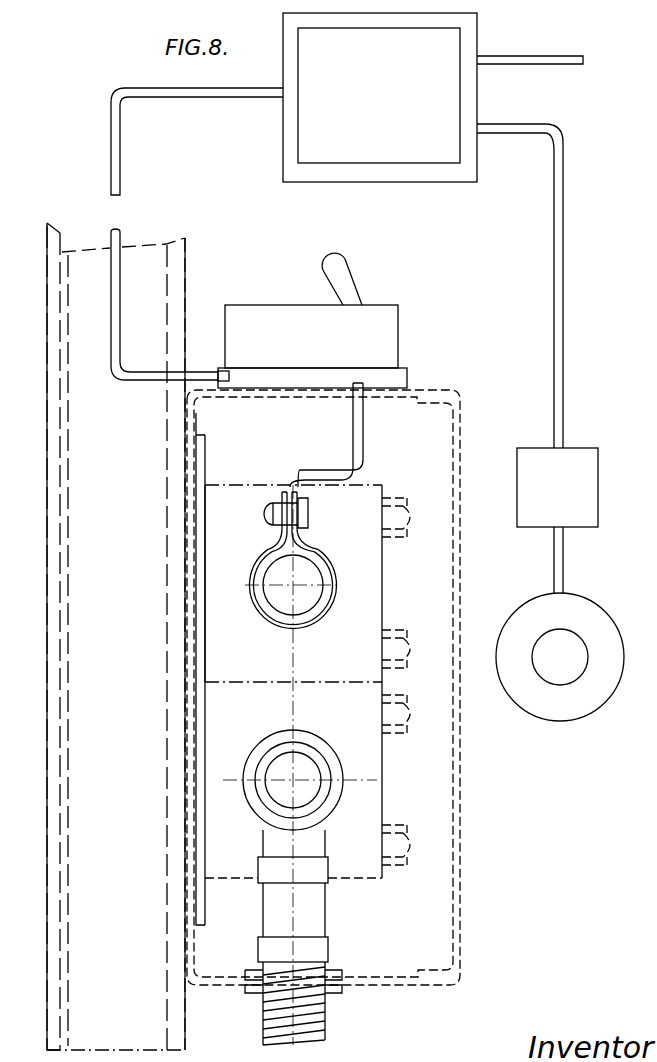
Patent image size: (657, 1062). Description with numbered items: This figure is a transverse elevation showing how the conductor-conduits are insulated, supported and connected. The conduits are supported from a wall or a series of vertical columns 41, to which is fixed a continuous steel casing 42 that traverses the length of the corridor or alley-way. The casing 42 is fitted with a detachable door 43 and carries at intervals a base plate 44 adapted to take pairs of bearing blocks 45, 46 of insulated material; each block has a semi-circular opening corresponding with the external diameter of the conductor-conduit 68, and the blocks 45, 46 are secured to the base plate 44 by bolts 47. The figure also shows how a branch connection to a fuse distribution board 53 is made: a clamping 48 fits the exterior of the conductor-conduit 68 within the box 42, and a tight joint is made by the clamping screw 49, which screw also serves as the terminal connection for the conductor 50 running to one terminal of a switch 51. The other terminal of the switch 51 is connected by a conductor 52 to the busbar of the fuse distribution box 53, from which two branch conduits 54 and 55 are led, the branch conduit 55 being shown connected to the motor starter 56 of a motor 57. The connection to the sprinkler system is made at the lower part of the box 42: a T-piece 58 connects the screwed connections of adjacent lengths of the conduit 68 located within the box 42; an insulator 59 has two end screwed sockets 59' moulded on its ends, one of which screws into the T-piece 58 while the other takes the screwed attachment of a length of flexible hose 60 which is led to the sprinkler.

The vertical columns 41 is at (70, 536).
The continuous steel casing 42 is at (405, 982).
The detachable door 43 is at (461, 937).
The base plate 44 is at (205, 915).
The bearing block 45 is at (293, 604).
The bearing block 46 is at (293, 765).
The bolts 47 is at (400, 514).
The clamping 48 is at (323, 597).
The clamping screw 49 is at (309, 511).
The conductor 50 is at (363, 437).
The switch 51 is at (312, 320).
The conductor 52 is at (239, 98).
The fuse distribution board 53 is at (417, 153).
The branch conduit 54 is at (552, 58).
The branch conduit 55 is at (553, 221).
The motor starter 56 is at (583, 455).
The motor 57 is at (594, 618).
The T-piece 58 is at (262, 805).
The insulator 59 is at (309, 883).
The end screwed sockets 59' is at (315, 900).
The flexible hose 60 is at (318, 1027).
The conductor-conduit 68 is at (312, 560).